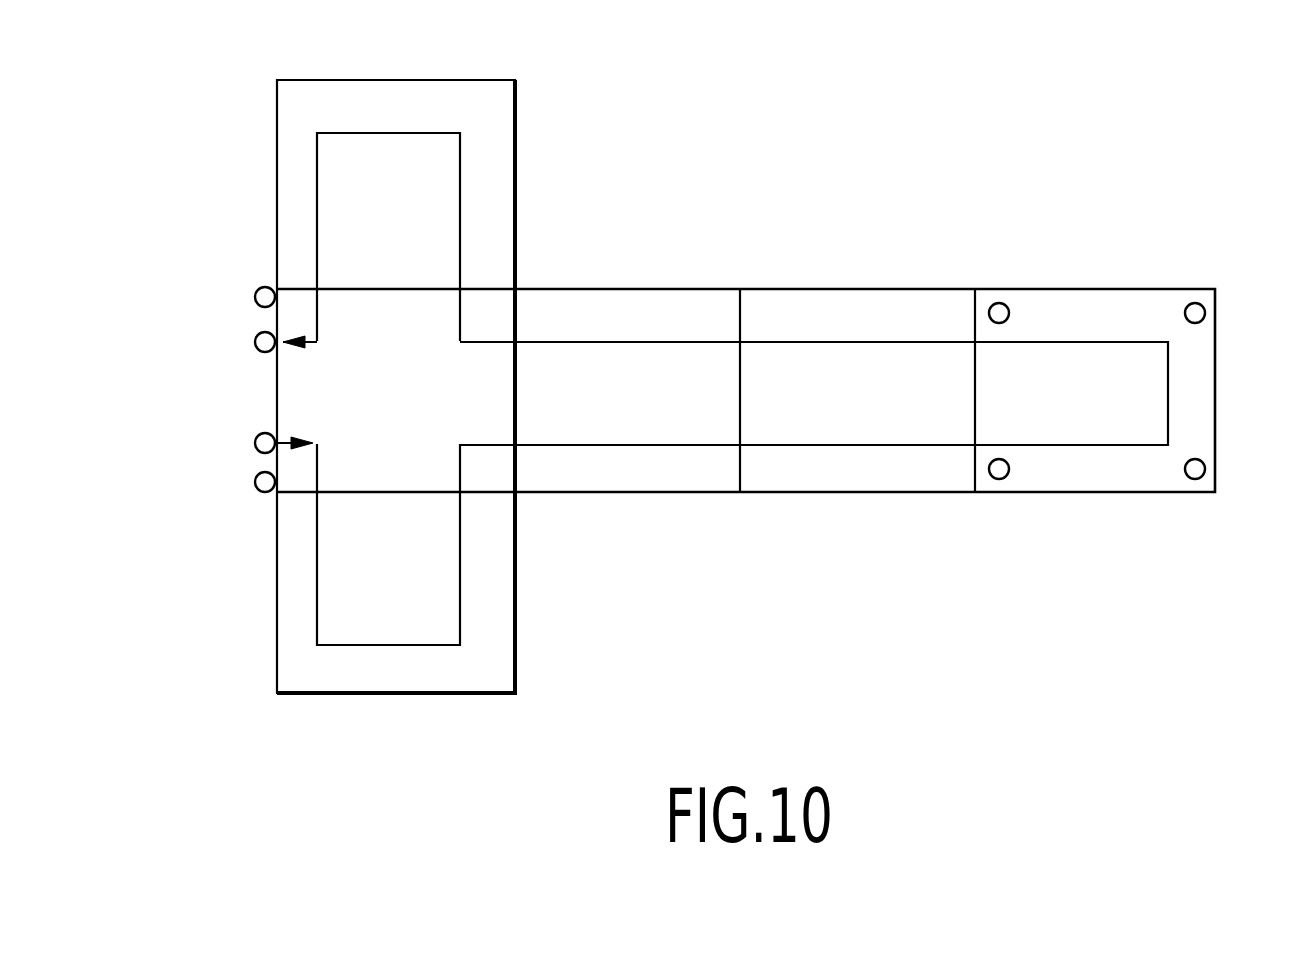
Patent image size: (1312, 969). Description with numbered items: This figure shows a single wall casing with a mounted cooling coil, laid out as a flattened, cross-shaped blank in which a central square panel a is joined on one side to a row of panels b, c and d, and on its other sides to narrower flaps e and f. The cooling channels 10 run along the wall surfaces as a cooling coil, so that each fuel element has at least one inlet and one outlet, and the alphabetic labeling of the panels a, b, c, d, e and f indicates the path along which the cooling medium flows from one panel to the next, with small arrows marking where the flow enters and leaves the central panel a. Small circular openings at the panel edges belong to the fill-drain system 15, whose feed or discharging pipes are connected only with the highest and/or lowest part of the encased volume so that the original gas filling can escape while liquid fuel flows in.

The cooling channels 10 is at (255, 445).
The fill-drain system 15 is at (256, 298).
The central panel a is at (781, 390).
The panel b is at (627, 410).
The panel c is at (674, 398).
The panel d is at (698, 405).
The flap e is at (711, 237).
The flap f is at (710, 544).